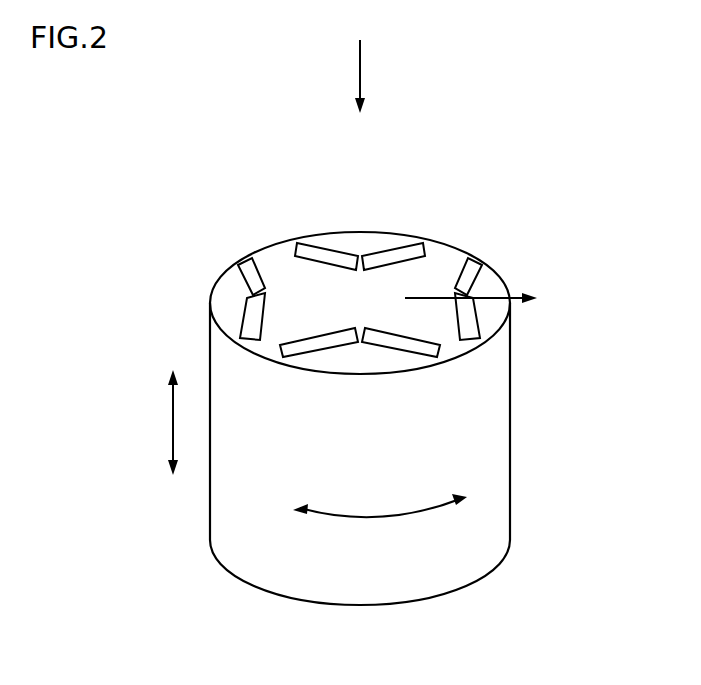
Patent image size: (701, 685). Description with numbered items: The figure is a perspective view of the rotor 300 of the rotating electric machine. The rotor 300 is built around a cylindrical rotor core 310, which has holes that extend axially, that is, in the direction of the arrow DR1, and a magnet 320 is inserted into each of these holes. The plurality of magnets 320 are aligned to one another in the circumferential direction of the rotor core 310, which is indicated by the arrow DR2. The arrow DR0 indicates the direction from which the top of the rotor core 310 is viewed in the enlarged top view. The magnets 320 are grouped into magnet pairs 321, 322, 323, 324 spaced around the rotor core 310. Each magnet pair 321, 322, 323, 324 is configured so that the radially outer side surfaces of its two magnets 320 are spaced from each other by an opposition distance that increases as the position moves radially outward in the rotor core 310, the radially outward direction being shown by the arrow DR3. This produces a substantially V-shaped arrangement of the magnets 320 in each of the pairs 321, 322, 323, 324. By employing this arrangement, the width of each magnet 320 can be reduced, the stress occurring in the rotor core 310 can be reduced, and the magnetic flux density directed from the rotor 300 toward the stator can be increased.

The rotor 300 is at (226, 225).
The rotor core 310 is at (467, 474).
The magnet 320 is at (362, 295).
The magnet pair 321 is at (594, 263).
The magnet pair 322 is at (412, 178).
The magnet pair 323 is at (126, 263).
The magnet pair 324 is at (462, 386).
The arrow DR0 is at (358, 72).
The arrow DR1 is at (170, 423).
The arrow DR2 is at (380, 517).
The arrow DR3 is at (441, 297).